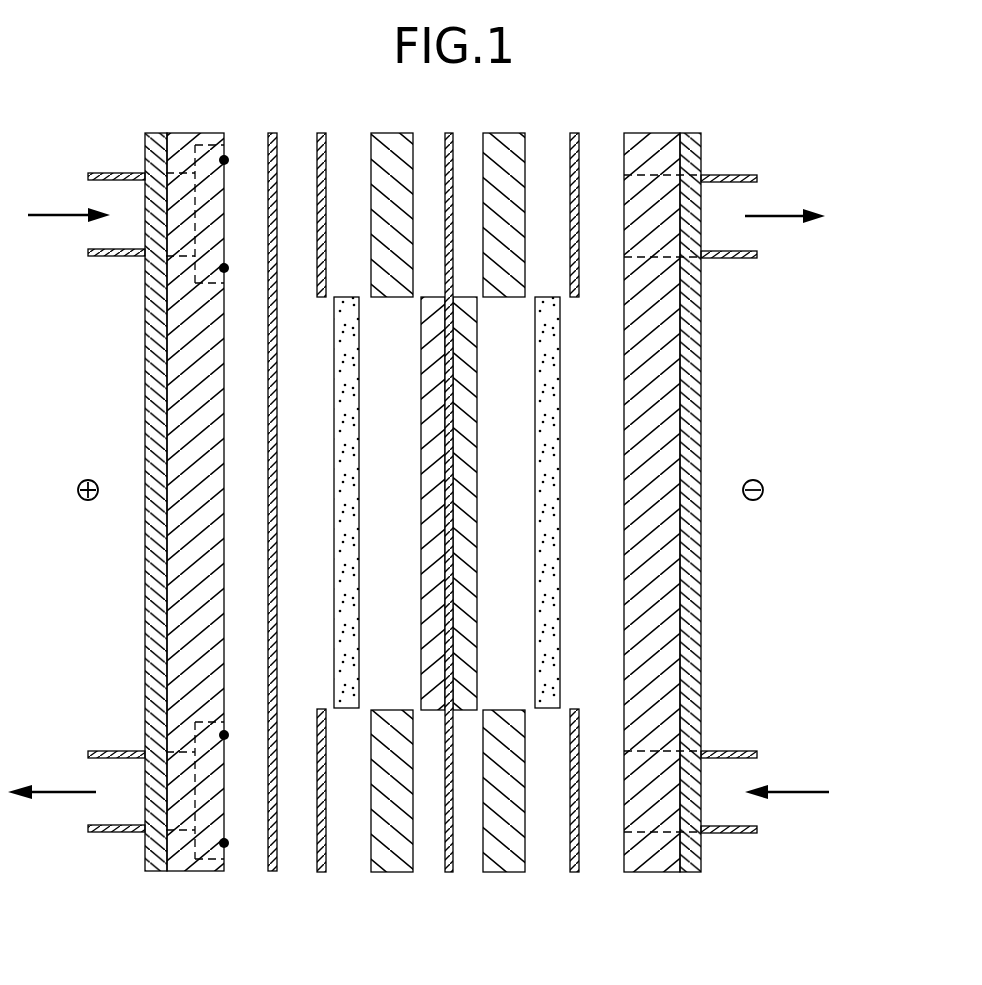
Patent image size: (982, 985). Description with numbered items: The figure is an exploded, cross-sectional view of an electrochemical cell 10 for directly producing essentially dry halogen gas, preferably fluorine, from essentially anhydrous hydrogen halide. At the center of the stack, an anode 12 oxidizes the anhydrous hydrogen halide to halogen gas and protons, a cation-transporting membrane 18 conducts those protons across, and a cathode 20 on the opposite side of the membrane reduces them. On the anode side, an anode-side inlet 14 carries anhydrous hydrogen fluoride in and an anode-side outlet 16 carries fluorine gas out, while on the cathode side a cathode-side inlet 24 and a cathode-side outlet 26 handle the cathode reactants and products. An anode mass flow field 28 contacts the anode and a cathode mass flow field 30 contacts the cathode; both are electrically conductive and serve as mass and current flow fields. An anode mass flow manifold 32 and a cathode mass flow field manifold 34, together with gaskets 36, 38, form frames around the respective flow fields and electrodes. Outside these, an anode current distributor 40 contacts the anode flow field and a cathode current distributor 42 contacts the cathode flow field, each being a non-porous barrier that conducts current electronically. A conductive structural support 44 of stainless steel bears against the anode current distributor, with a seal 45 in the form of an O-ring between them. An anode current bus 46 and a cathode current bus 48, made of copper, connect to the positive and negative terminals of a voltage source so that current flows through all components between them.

The electrochemical cell 10 is at (150, 58).
The anode 12 is at (430, 408).
The anode-side inlet 14 is at (118, 173).
The anode-side outlet 16 is at (118, 752).
The cation-transporting membrane 18 is at (448, 872).
The cathode 20 is at (455, 408).
The cathode-side inlet 24 is at (730, 751).
The cathode-side outlet 26 is at (725, 175).
The anode mass flow field 28 is at (340, 595).
The cathode mass flow field 30 is at (548, 595).
The anode mass flow manifold 32 is at (400, 133).
The cathode mass flow field manifold 34 is at (505, 133).
The gasket 36 is at (320, 133).
The gasket 38 is at (574, 133).
The anode current distributor 40 is at (271, 872).
The cathode current distributor 42 is at (670, 872).
The conductive structural support 44 is at (192, 872).
The seal 45 is at (230, 158).
The anode current bus 46 is at (155, 872).
The cathode current bus 48 is at (688, 872).